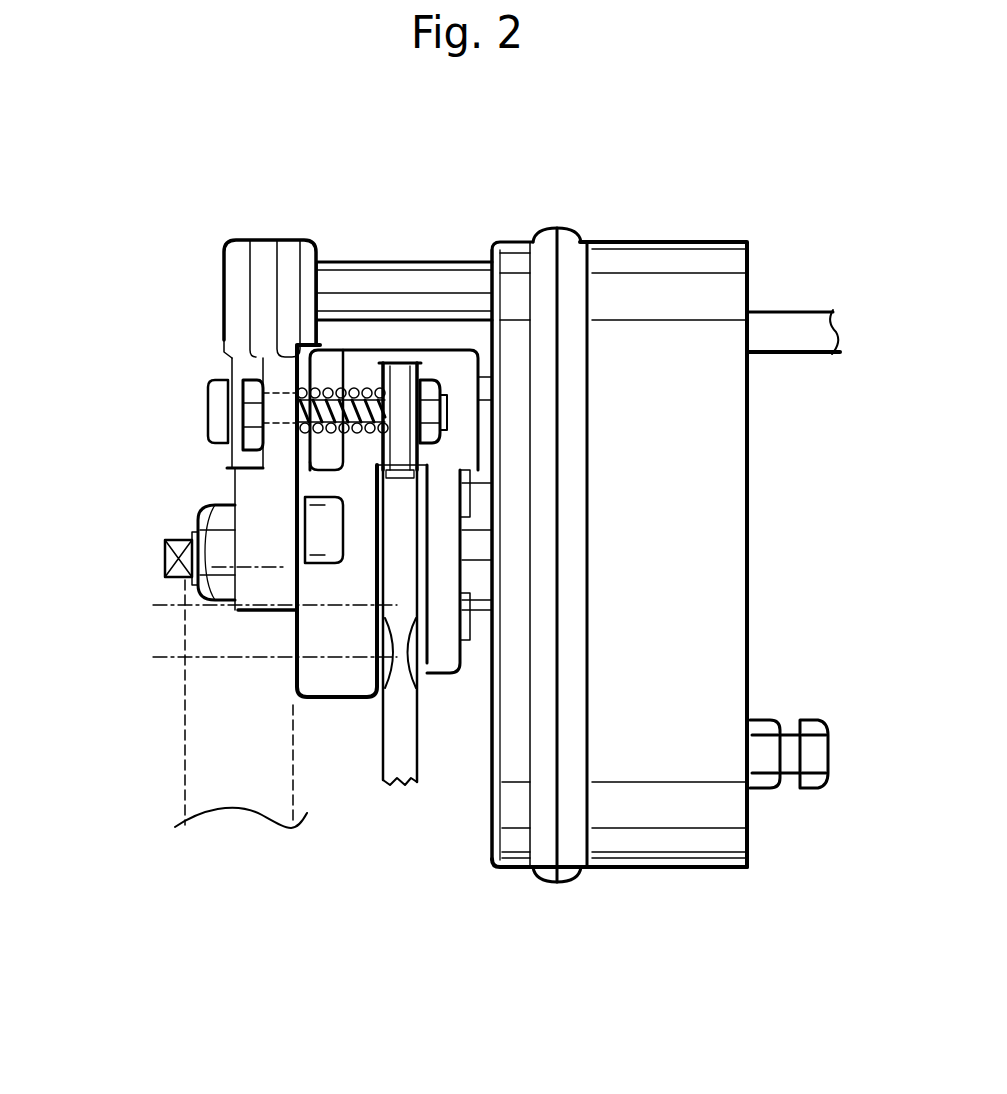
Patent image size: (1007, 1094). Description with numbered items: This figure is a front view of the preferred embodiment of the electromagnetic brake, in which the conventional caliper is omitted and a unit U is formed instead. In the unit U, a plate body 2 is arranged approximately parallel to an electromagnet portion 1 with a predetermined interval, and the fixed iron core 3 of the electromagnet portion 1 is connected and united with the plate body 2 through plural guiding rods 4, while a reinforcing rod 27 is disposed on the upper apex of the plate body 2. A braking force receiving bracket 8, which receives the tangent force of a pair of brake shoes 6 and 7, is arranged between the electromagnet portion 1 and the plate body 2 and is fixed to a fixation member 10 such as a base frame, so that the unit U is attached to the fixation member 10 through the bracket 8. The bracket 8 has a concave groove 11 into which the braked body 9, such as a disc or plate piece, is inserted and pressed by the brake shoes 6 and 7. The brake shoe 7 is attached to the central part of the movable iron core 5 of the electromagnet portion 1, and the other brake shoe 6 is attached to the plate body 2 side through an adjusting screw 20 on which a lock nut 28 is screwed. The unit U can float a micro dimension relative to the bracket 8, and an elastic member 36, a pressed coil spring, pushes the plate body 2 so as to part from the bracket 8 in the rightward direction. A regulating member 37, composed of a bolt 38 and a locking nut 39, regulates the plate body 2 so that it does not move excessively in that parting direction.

The electromagnet portion 1 is at (650, 878).
The plate body 2 is at (261, 228).
The fixed iron core 3 is at (642, 359).
The guiding rods 4 is at (481, 375).
The movable iron core 5 is at (507, 870).
The brake shoe 6 is at (383, 707).
The brake shoe 7 is at (420, 700).
The braking force receiving bracket 8 is at (328, 684).
The braked body 9 is at (420, 760).
The fixation member 10 is at (181, 745).
The concave groove 11 is at (403, 484).
The adjusting screw 20 is at (166, 547).
The reinforcing rod 27 is at (365, 262).
The lock nut 28 is at (213, 506).
The elastic member 36 is at (324, 384).
The regulating member 37 is at (352, 372).
The bolt 38 is at (244, 408).
The nut 39 is at (440, 426).
The unit U is at (659, 546).